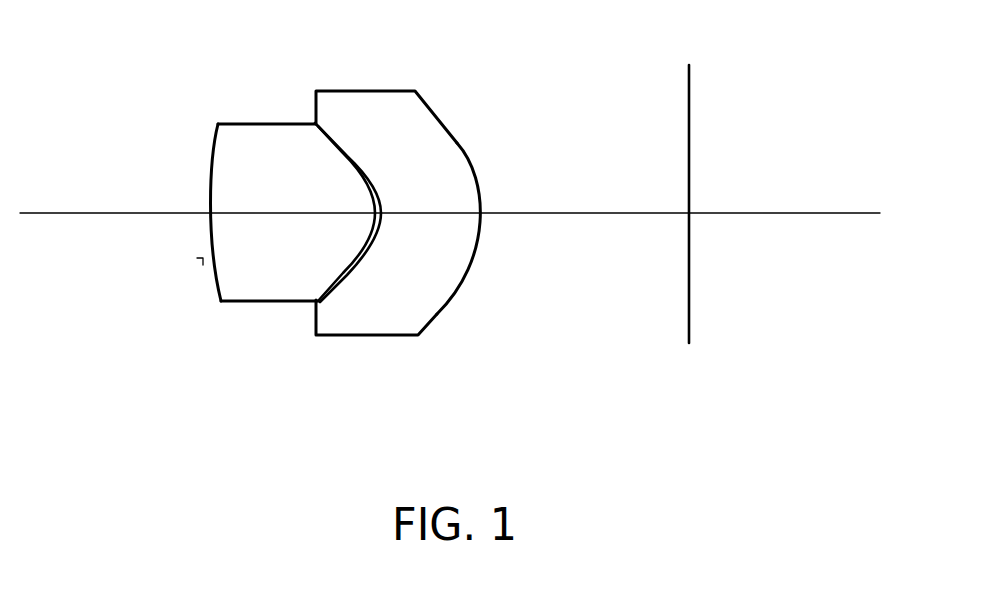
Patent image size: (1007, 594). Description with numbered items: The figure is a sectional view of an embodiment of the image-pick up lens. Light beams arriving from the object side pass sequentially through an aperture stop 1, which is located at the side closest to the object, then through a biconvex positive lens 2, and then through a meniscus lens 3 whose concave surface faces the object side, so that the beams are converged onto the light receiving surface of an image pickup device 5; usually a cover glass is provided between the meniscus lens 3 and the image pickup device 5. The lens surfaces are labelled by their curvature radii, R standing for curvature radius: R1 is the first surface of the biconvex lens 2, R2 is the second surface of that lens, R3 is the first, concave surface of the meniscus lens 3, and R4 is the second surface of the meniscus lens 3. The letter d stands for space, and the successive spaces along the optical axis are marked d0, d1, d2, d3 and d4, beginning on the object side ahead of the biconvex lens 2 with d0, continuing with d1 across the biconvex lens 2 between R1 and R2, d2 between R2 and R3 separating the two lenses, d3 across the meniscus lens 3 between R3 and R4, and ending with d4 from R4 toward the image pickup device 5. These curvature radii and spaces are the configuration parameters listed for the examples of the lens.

The aperture stop 1 is at (314, 222).
The biconvex positive lens 2 is at (280, 223).
The meniscus lens 3 is at (402, 222).
The image pickup device 5 is at (689, 92).
The space d0 is at (198, 213).
The space d1 is at (307, 213).
The space d2 is at (380, 213).
The space d3 is at (463, 213).
The space d4 is at (547, 213).
The curvature radius of first surface of biconvex lens R1 is at (213, 268).
The curvature radius of second surface of biconvex lens R2 is at (364, 240).
The curvature radius of first surface of meniscus lens R3 is at (382, 218).
The curvature radius of second surface of meniscus lens R4 is at (437, 315).